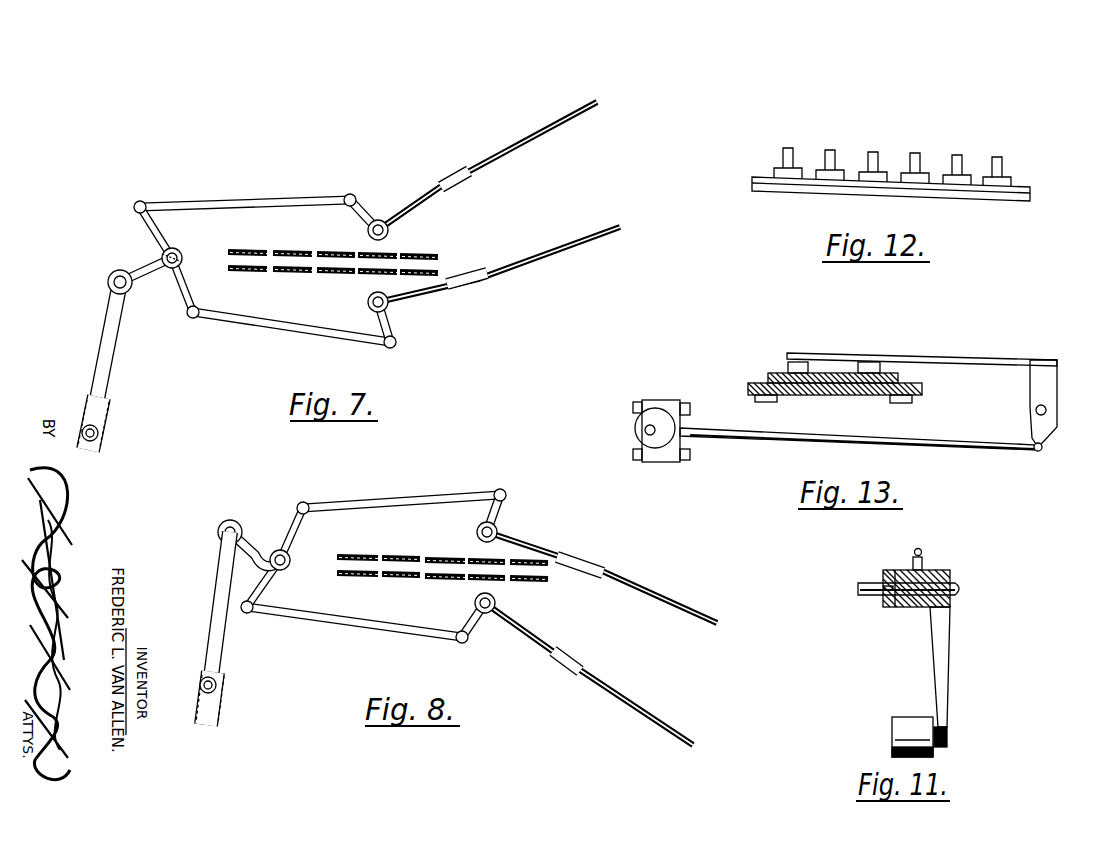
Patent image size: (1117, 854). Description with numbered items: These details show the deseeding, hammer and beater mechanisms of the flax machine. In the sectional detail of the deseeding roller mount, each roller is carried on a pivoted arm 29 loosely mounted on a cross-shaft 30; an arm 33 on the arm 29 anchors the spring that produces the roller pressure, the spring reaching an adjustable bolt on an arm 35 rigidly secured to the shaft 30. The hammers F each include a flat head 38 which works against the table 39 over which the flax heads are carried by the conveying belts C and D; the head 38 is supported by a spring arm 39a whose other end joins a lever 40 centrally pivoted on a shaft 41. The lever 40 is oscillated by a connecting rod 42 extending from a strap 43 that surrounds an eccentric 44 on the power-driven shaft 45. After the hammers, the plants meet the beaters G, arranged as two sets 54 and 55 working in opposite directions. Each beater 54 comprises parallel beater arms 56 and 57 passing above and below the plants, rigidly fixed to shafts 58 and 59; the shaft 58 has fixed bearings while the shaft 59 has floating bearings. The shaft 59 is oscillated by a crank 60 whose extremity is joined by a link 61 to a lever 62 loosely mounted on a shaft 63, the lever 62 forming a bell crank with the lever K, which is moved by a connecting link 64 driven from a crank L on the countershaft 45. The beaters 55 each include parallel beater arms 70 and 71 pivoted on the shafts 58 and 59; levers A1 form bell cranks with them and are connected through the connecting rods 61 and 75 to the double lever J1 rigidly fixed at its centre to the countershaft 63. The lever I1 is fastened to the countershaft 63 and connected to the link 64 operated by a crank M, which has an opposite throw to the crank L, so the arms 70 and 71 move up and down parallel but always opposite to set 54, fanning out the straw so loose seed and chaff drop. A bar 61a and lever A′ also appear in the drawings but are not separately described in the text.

In FIG. 11, the pivoted arm 29 is at (948, 658).
In FIG. 11, the cross-shaft 30 is at (964, 588).
In FIG. 11, the arm 33 is at (925, 558).
In FIG. 11, the arm 35 is at (885, 607).
In FIG. 12, the flat head 38 is at (824, 168).
In FIG. 13, the flat head 38 is at (850, 372).
In FIG. 12, the table 39 is at (818, 190).
In FIG. 13, the table 39 is at (922, 359).
In FIG. 12, the spring arm 39a is at (875, 150).
In FIG. 13, the spring arm 39a is at (967, 364).
In FIG. 13, the lever 40 is at (1059, 388).
In FIG. 13, the shaft 41 is at (1050, 416).
In FIG. 13, the connecting rod 42 is at (980, 451).
In FIG. 13, the strap 43 is at (664, 398).
In FIG. 13, the eccentric 44 is at (660, 445).
In FIG. 13, the shaft 45 is at (648, 433).
In FIG. 8, the beaters 54 is at (718, 620).
In FIG. 7, the beaters 55 is at (600, 102).
In FIG. 8, the beater arm 56 is at (636, 588).
In FIG. 8, the beater arm 57 is at (618, 702).
In FIG. 7, the shaft 58 is at (390, 305).
In FIG. 8, the shaft 58 is at (497, 603).
In FIG. 7, the shaft 59 is at (390, 232).
In FIG. 8, the shaft 59 is at (498, 530).
In FIG. 8, the crank 60 is at (503, 505).
In FIG. 7, the link 61 is at (255, 200).
In FIG. 8, the link 61 is at (398, 500).
In FIG. 8, the bar 61a is at (347, 622).
In FIG. 8, the lever 62 is at (290, 530).
In FIG. 7, the shaft 63 is at (180, 251).
In FIG. 8, the shaft 63 is at (291, 558).
In FIG. 7, the connecting link 64 is at (107, 372).
In FIG. 8, the connecting link 64 is at (215, 601).
In FIG. 7, the beater arm 70 is at (514, 142).
In FIG. 7, the beater arm 71 is at (552, 246).
In FIG. 7, the connecting rod 75 is at (292, 328).
In FIG. 7, the conveying belt C is at (334, 250).
In FIG. 8, the conveying belt C is at (440, 553).
In FIG. 7, the conveying belt D is at (337, 275).
In FIG. 8, the conveying belt D is at (442, 581).
In FIG. 7, the beaters G is at (478, 178).
In FIG. 8, the beaters G is at (598, 583).
In FIG. 8, the lever K is at (258, 541).
In FIG. 8, the crank L is at (224, 695).
In FIG. 7, the crank M is at (112, 424).
In FIG. 12, the hammers F is at (920, 160).
In FIG. 7, the link A′ is at (366, 210).
In FIG. 7, the levers A1 is at (398, 328).
In FIG. 7, the lever I1 is at (144, 275).
In FIG. 7, the double lever J1 is at (150, 230).